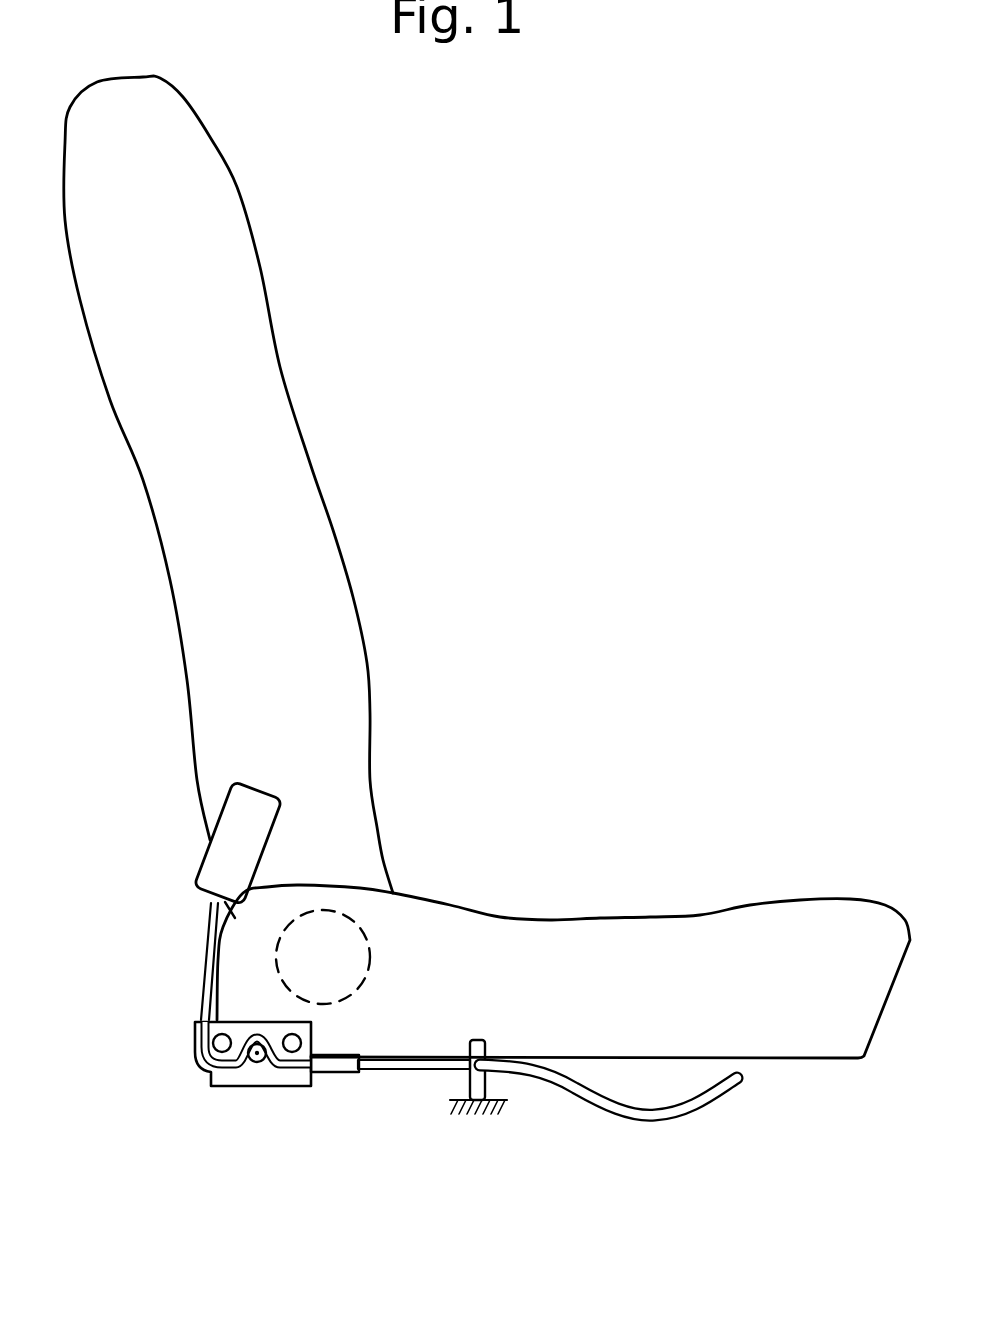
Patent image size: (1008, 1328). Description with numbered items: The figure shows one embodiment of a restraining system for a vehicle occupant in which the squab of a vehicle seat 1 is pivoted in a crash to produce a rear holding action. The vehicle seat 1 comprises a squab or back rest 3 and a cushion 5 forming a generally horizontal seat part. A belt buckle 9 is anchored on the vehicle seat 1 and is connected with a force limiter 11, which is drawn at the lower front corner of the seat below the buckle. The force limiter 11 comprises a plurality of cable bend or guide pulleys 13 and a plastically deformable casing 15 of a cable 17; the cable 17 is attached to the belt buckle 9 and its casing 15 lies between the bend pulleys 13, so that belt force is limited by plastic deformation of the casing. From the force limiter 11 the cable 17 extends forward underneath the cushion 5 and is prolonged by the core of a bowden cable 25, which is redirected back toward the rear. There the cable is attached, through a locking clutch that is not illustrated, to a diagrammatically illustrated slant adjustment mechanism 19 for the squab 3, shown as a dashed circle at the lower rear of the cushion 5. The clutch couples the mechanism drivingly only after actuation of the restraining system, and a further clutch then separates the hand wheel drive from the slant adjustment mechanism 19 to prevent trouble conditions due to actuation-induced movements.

The vehicle seat 1 is at (518, 372).
The squab 3 is at (230, 290).
The cushion 5 is at (588, 960).
The belt buckle 9 is at (232, 828).
The force limiter 11 is at (200, 1075).
The cable bend pulleys 13 is at (257, 1060).
The plastically deformable casing 15 is at (302, 1070).
The cable 17 is at (407, 1073).
The slant adjustment mechanism 19 is at (378, 940).
The bowden cable 25 is at (648, 1117).